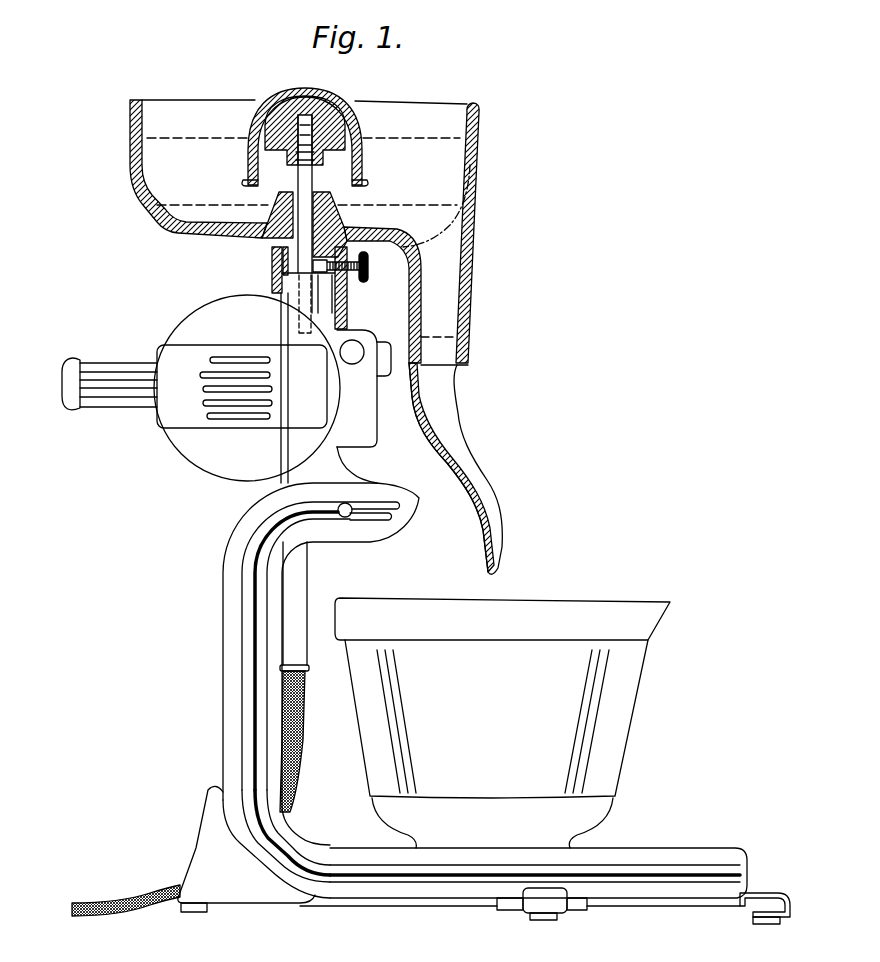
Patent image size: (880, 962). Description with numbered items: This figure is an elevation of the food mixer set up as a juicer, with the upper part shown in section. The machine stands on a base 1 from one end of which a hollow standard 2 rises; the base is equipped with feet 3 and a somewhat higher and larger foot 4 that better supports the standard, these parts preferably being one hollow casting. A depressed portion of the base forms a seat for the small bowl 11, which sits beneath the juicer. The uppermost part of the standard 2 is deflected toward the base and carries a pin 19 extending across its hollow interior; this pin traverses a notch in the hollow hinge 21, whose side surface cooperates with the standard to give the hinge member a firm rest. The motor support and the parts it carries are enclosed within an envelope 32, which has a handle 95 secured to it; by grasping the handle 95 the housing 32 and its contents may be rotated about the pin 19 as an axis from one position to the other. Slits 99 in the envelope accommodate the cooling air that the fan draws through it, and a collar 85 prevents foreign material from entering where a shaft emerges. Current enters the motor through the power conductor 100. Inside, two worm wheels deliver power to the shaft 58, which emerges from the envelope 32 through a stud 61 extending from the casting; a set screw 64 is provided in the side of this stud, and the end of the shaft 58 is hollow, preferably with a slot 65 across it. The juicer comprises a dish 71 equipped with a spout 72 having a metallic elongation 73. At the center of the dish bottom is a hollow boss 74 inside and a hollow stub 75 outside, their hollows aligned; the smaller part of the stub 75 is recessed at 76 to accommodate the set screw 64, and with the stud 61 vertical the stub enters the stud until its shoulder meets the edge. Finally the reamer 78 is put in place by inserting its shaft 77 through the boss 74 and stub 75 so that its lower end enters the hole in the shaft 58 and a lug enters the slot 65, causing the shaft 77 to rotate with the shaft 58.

The base 1 is at (742, 855).
The standard 2 is at (223, 686).
The feet 3 is at (590, 898).
The foot 4 is at (194, 852).
The small bowl 11 is at (632, 724).
The pin 19 is at (349, 507).
The hinge 21 is at (353, 469).
The envelope 32 is at (193, 463).
The shaft 58 is at (313, 296).
The stud 61 is at (347, 305).
The set screw 64 is at (368, 254).
The slot 65 is at (303, 292).
The dish 71 is at (483, 131).
The spout 72 is at (470, 291).
The metallic elongation 73 is at (497, 497).
The hollow boss 74 is at (338, 203).
The hollow stub 75 is at (270, 243).
The recess 76 is at (330, 273).
The shaft 77 is at (312, 176).
The reamer 78 is at (330, 99).
The collar 85 is at (389, 376).
The handle 95 is at (103, 402).
The slits 99 is at (205, 391).
The power conductor 100 is at (303, 757).